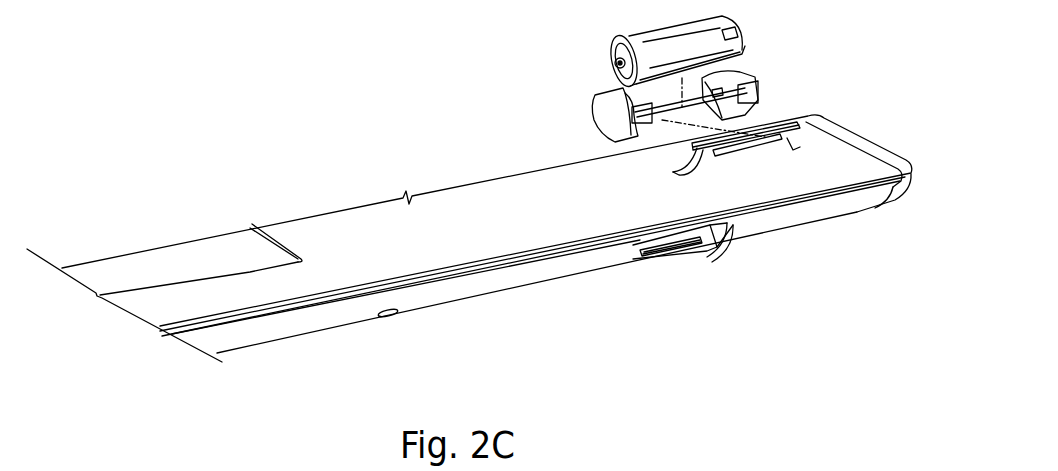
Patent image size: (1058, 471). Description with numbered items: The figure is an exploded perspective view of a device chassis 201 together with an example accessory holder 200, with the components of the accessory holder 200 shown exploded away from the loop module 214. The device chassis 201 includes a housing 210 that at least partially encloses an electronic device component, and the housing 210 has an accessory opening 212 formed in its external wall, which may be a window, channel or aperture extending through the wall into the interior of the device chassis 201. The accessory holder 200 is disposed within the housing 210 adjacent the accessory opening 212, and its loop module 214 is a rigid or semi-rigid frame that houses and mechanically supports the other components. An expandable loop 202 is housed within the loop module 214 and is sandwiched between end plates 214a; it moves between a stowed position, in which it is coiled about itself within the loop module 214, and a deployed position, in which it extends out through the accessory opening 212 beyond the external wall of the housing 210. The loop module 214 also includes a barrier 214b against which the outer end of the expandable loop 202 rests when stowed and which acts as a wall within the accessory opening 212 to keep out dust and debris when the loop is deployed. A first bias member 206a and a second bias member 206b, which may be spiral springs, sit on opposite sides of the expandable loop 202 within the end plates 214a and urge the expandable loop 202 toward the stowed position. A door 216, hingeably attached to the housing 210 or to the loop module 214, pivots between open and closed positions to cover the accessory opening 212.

The accessory holder 200 is at (575, 86).
The device chassis 201 is at (191, 114).
The expandable loop 202 is at (633, 37).
The first bias member 206a is at (613, 62).
The second bias member 206b is at (742, 43).
The housing 210 is at (175, 302).
The accessory opening 212 is at (627, 257).
The loop module 214 is at (586, 147).
The end plates 214a is at (595, 118).
The barrier 214b is at (668, 118).
The door 216 is at (830, 150).